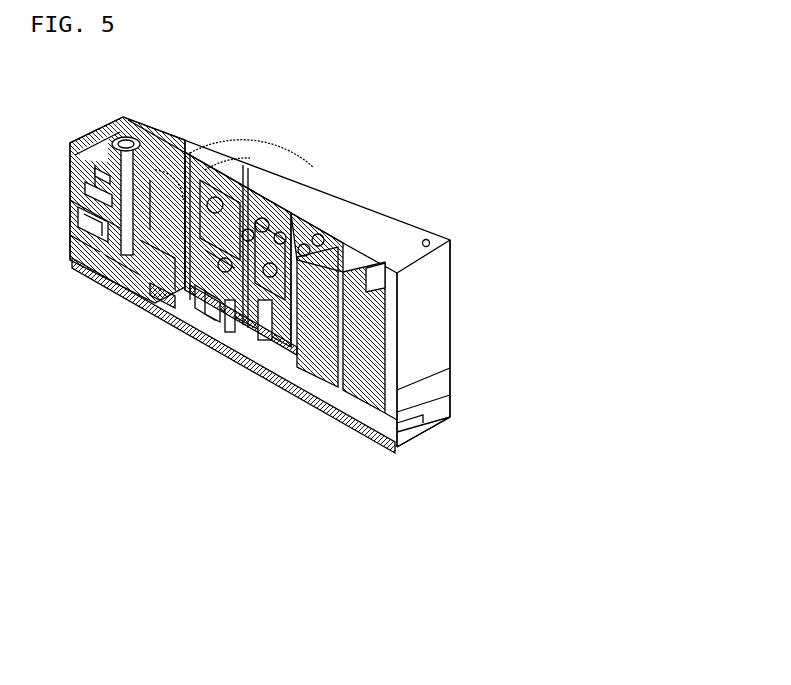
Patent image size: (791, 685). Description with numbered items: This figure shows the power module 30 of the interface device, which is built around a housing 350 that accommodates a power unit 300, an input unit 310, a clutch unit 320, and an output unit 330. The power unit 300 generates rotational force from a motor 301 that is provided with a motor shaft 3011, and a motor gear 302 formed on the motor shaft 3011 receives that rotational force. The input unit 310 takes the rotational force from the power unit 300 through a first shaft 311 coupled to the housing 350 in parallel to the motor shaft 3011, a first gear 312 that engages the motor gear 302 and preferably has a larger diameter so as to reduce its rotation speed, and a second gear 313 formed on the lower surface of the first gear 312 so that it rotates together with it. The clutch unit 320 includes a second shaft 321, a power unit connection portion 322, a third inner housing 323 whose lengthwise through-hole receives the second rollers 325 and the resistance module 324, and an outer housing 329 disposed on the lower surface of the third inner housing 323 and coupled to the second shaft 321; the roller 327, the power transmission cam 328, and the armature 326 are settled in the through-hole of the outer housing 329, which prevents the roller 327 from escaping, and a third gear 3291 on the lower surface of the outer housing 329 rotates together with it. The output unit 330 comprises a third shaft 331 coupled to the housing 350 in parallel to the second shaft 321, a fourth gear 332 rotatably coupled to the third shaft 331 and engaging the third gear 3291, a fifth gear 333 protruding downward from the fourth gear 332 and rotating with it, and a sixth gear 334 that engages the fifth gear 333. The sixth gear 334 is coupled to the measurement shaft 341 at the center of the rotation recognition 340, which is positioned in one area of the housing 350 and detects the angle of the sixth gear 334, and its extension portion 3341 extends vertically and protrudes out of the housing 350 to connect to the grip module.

The power module 30 is at (430, 102).
The power unit 300 is at (380, 362).
The motor 301 is at (381, 445).
The motor shaft 3011 is at (340, 418).
The motor gear 302 is at (392, 215).
The input unit 310 is at (321, 552).
The first shaft 311 is at (322, 200).
The first gear 312 is at (360, 218).
The second gear 313 is at (336, 206).
The clutch unit 320 is at (242, 497).
The second shaft 321 is at (243, 175).
The power unit connection portion 322 is at (266, 182).
The third inner housing 323 is at (315, 180).
The resistance module 324 is at (282, 177).
The second rollers 325 is at (292, 186).
The armature 326 is at (265, 340).
The roller 327 is at (233, 426).
The power transmission cam 328 is at (244, 335).
The outer housing 329 is at (213, 320).
The third gear 3291 is at (230, 332).
The output unit 330 is at (141, 543).
The third shaft 331 is at (188, 300).
The fourth gear 332 is at (168, 152).
The fifth gear 333 is at (156, 304).
The sixth gear 334 is at (88, 192).
The extension portion 3341 is at (95, 178).
The rotation recognition 340 is at (122, 292).
The measurement shaft 341 is at (82, 225).
The housing 350 is at (440, 285).